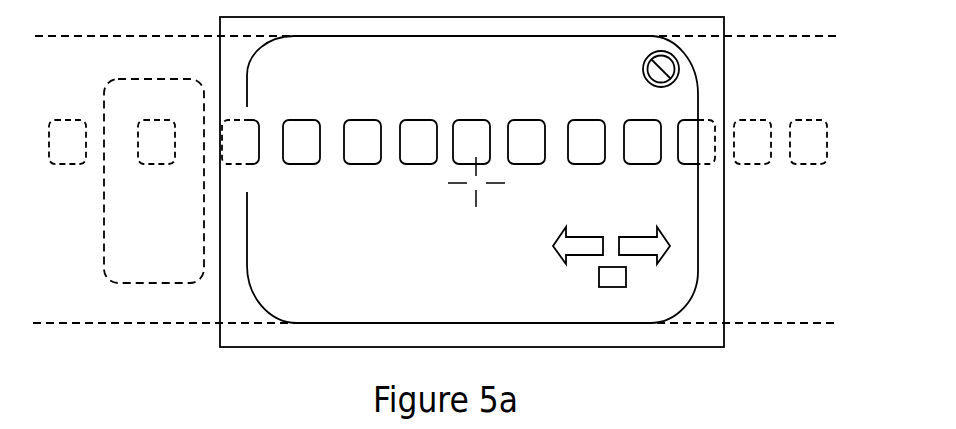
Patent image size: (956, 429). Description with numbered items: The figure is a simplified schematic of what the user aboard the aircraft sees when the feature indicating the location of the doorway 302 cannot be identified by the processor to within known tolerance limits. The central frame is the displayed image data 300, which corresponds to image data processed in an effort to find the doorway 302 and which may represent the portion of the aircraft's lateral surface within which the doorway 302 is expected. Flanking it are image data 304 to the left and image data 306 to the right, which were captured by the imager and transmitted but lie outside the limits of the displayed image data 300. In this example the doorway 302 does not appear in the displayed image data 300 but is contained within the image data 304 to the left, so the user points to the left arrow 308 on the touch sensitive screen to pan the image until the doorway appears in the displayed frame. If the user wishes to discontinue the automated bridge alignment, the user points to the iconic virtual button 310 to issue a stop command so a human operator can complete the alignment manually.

The displayed image data 300 is at (313, 321).
The doorway 302 is at (160, 284).
The image data 304 is at (91, 318).
The image data 306 is at (817, 317).
The left arrow 308 is at (583, 255).
The iconic virtual button 310 is at (674, 82).